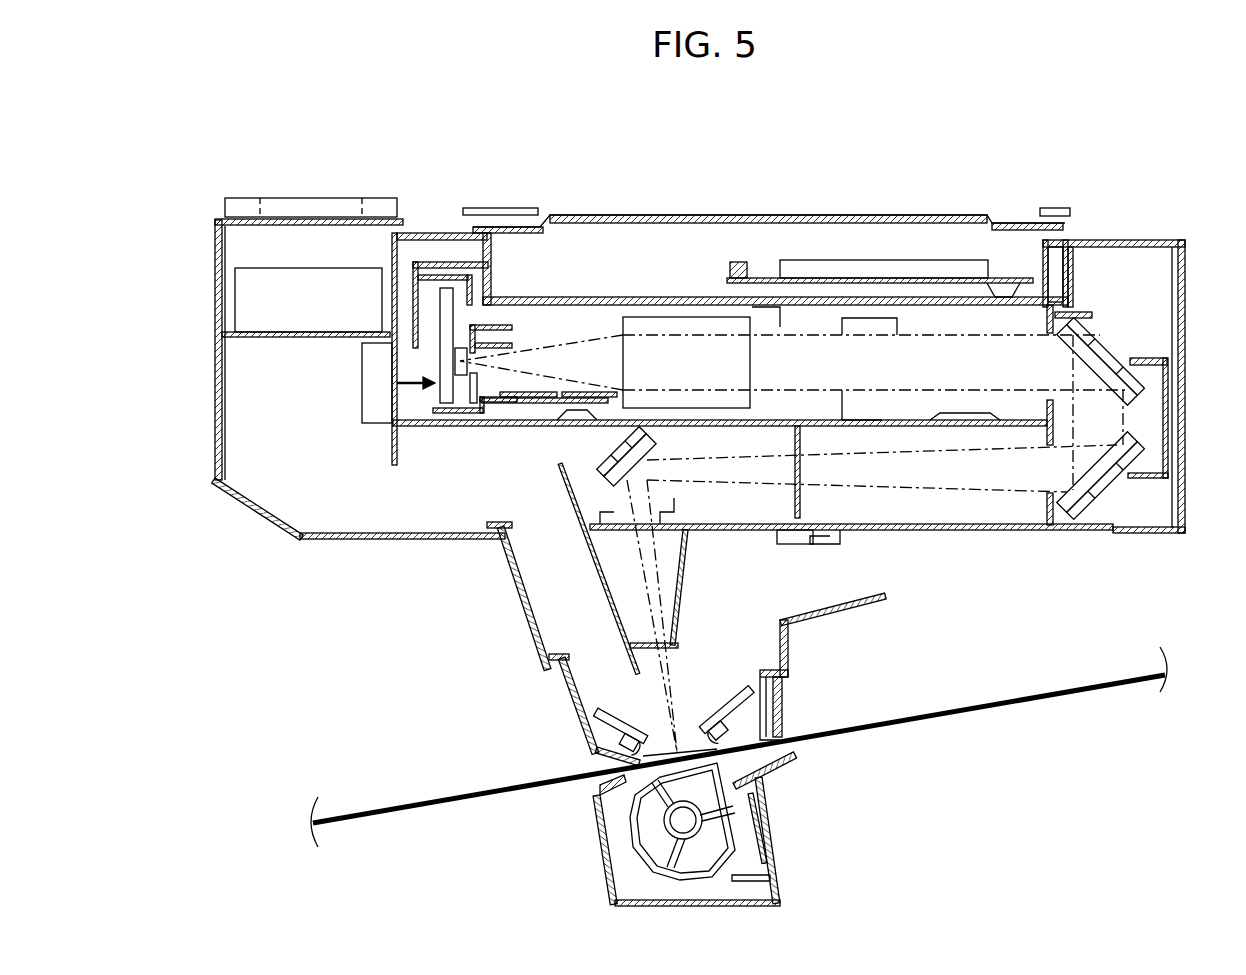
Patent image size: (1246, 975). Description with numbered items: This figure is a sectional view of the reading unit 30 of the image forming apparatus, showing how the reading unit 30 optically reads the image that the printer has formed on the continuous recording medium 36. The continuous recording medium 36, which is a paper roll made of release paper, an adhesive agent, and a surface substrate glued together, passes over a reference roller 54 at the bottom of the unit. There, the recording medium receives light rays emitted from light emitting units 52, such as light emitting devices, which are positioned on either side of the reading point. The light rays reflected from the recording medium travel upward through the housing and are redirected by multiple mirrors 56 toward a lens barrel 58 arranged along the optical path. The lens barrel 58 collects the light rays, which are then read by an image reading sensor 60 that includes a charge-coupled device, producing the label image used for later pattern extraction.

The reading unit 30 is at (1087, 128).
The continuous recording medium 36 is at (384, 809).
The light emitting units 52 is at (636, 708).
The reference roller 54 is at (635, 828).
The mirrors 56 is at (1083, 337).
The lens barrel 58 is at (649, 325).
The image reading sensor 60 is at (453, 356).